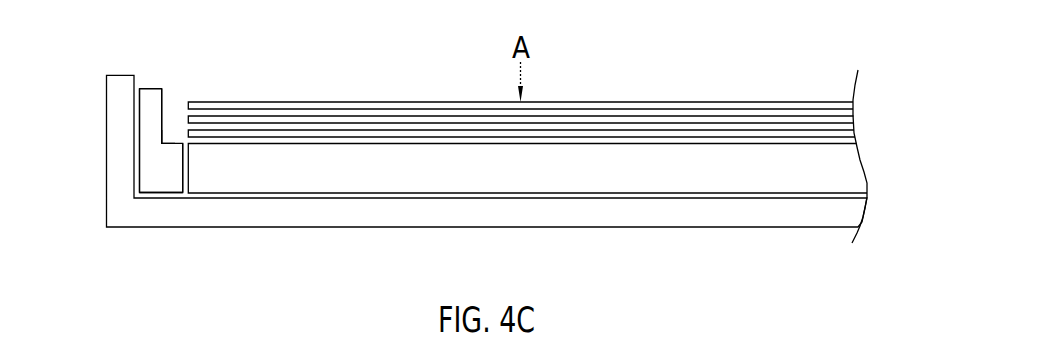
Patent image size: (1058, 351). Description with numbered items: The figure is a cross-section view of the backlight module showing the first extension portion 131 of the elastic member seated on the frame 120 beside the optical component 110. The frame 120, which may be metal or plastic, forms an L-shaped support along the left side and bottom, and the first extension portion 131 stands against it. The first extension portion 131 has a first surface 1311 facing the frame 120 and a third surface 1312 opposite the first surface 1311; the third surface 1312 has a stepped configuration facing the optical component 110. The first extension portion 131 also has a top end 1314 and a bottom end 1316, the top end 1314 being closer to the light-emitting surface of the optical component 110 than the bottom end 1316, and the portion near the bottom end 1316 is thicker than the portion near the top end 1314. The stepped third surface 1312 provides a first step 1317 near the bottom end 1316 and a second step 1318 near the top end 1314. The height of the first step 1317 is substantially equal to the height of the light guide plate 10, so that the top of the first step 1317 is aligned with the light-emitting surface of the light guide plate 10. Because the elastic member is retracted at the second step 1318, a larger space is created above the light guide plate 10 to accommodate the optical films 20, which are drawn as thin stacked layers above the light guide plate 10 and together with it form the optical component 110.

The light guide plate 10 is at (868, 145).
The optical films 20 is at (868, 102).
The optical component 110 is at (571, 147).
The frame 120 is at (120, 87).
The first extension portion 131 is at (148, 155).
The first surface 1311 is at (138, 184).
The third surface 1312 is at (162, 142).
The top end 1314 is at (152, 93).
The bottom end 1316 is at (163, 190).
The first step 1317 is at (170, 186).
The second step 1318 is at (147, 97).